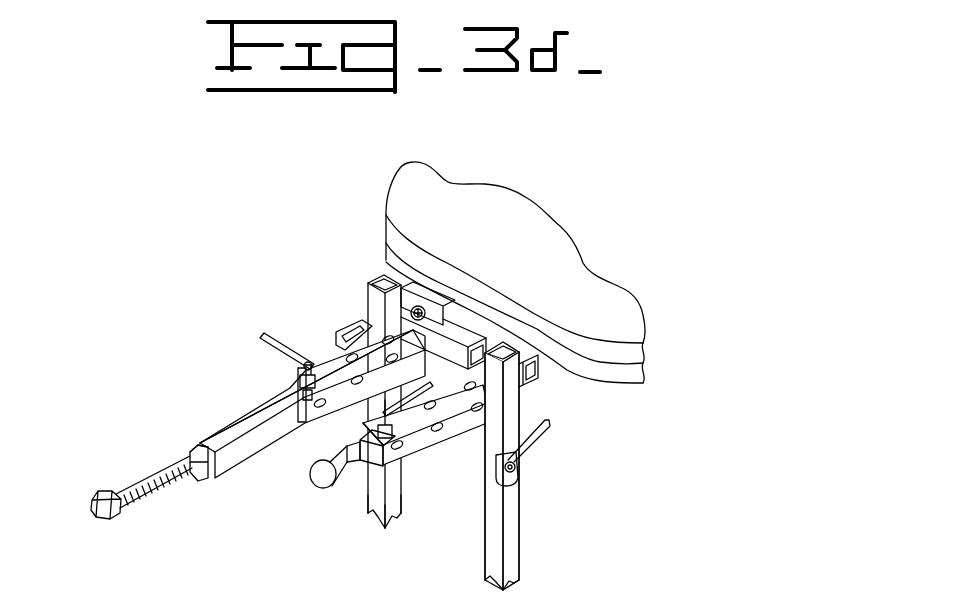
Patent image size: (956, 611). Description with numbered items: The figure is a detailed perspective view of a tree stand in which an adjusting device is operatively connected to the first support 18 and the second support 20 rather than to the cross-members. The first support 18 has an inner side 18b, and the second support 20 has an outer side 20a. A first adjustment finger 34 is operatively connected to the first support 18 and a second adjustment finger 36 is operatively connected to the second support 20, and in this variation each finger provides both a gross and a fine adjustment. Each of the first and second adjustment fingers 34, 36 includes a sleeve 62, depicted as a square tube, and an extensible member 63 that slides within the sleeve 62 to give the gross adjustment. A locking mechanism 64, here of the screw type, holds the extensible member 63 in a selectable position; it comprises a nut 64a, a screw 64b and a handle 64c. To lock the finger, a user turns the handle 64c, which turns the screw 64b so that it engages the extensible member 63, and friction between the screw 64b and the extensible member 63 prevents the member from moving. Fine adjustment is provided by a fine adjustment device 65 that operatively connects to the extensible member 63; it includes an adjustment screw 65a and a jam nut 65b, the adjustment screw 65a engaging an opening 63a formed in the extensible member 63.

The first support 18 is at (367, 510).
The inner side 18b is at (403, 520).
The second support 20 is at (520, 533).
The outer side 20a is at (512, 560).
The first adjustment finger 34 is at (326, 326).
The second adjustment finger 36 is at (452, 440).
The sleeve 62 is at (307, 362).
The extensible member 63 is at (213, 423).
The opening 63a is at (173, 445).
The locking mechanism 64 is at (262, 343).
The nut 64a is at (298, 425).
The screw 64b is at (300, 380).
The handle 64c is at (262, 348).
The fine adjustment device 65 is at (90, 469).
The adjustment screw 65a is at (177, 462).
The jam nut 65b is at (202, 477).